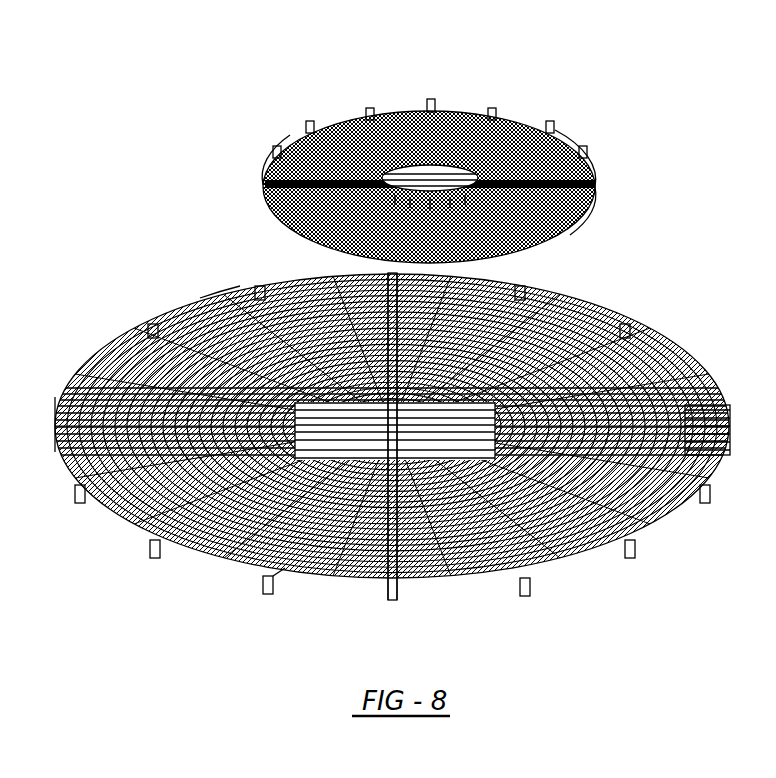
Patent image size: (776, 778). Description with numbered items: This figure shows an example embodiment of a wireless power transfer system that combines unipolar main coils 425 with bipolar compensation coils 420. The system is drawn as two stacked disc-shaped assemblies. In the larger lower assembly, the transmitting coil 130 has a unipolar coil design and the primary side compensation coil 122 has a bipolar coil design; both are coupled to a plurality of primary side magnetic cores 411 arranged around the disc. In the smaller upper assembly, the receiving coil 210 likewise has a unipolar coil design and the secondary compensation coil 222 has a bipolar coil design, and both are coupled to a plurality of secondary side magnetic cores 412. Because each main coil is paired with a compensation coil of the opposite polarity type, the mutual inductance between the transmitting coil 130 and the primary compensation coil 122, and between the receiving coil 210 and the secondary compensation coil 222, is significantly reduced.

The receiving coil 210 is at (340, 118).
The secondary side magnetic cores 412 is at (431, 100).
The secondary compensation coil 222 is at (590, 195).
The unipolar main coil 425 is at (265, 155).
The bipolar compensation coil 420 is at (560, 232).
The transmitting coil 130 is at (62, 385).
The primary side compensation coil 122 is at (725, 460).
The primary side magnetic cores 411 is at (262, 578).